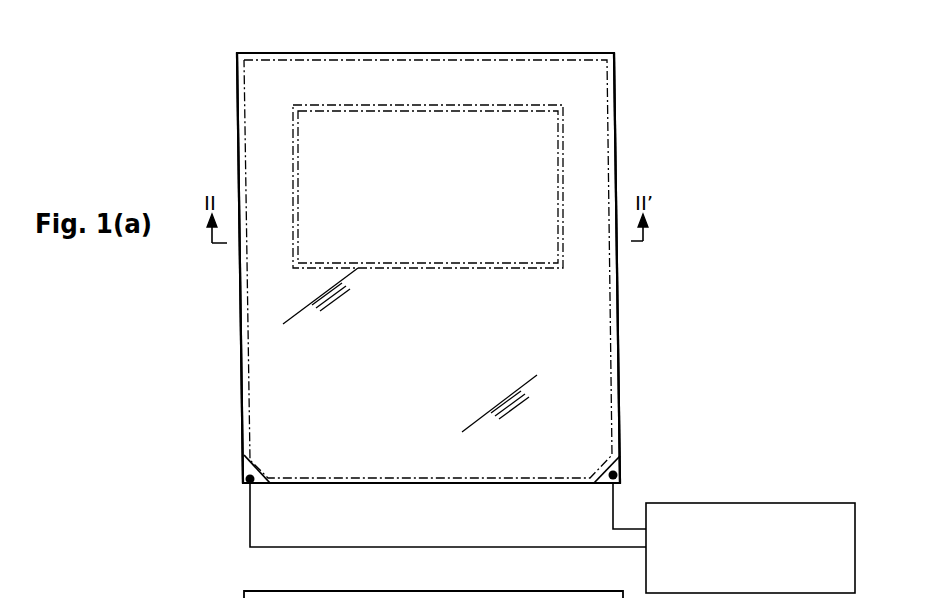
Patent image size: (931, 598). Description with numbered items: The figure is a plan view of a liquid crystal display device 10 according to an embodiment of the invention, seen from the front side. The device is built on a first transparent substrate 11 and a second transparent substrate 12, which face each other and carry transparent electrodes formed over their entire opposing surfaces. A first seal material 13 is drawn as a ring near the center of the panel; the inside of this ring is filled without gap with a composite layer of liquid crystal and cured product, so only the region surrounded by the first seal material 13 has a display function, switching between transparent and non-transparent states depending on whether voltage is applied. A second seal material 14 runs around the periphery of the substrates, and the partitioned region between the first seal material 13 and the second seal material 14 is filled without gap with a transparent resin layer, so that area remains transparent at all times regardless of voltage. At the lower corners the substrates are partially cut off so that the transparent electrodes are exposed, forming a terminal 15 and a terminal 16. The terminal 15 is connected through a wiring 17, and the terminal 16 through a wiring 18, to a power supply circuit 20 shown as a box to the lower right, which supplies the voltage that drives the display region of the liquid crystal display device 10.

The liquid crystal display device 10 is at (684, 53).
The first transparent substrate 11 is at (240, 268).
The second transparent substrate 12 is at (574, 356).
The first seal material 13 is at (560, 165).
The second seal material 14 is at (621, 290).
The terminal 15 is at (244, 468).
The terminal 16 is at (622, 472).
The wiring 17 is at (553, 546).
The wiring 18 is at (618, 518).
The power supply circuit 20 is at (744, 500).